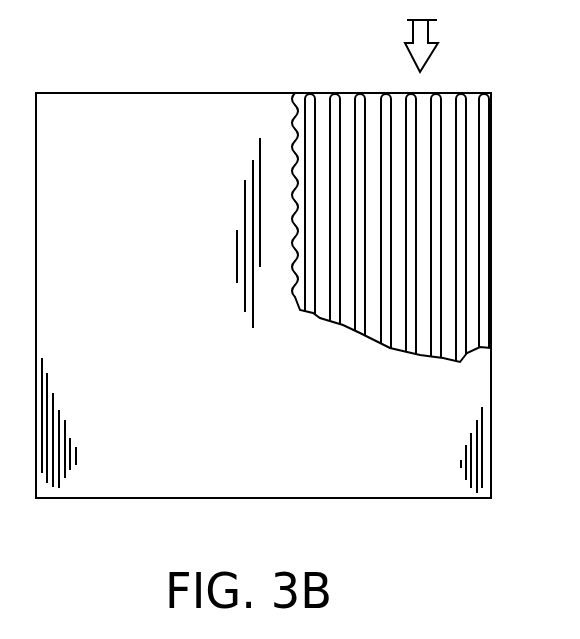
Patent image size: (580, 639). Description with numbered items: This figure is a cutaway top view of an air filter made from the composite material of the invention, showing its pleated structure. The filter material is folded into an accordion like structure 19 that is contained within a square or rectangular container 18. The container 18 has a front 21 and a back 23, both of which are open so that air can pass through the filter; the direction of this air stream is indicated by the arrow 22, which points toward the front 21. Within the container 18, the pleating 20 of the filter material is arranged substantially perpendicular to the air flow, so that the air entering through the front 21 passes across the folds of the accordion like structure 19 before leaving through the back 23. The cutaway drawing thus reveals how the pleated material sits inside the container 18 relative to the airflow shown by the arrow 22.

The container 18 is at (170, 485).
The accordion like structure 19 is at (468, 188).
The pleating 20 is at (320, 93).
The front 21 is at (73, 92).
The arrow 22 is at (428, 33).
The back 23 is at (98, 498).